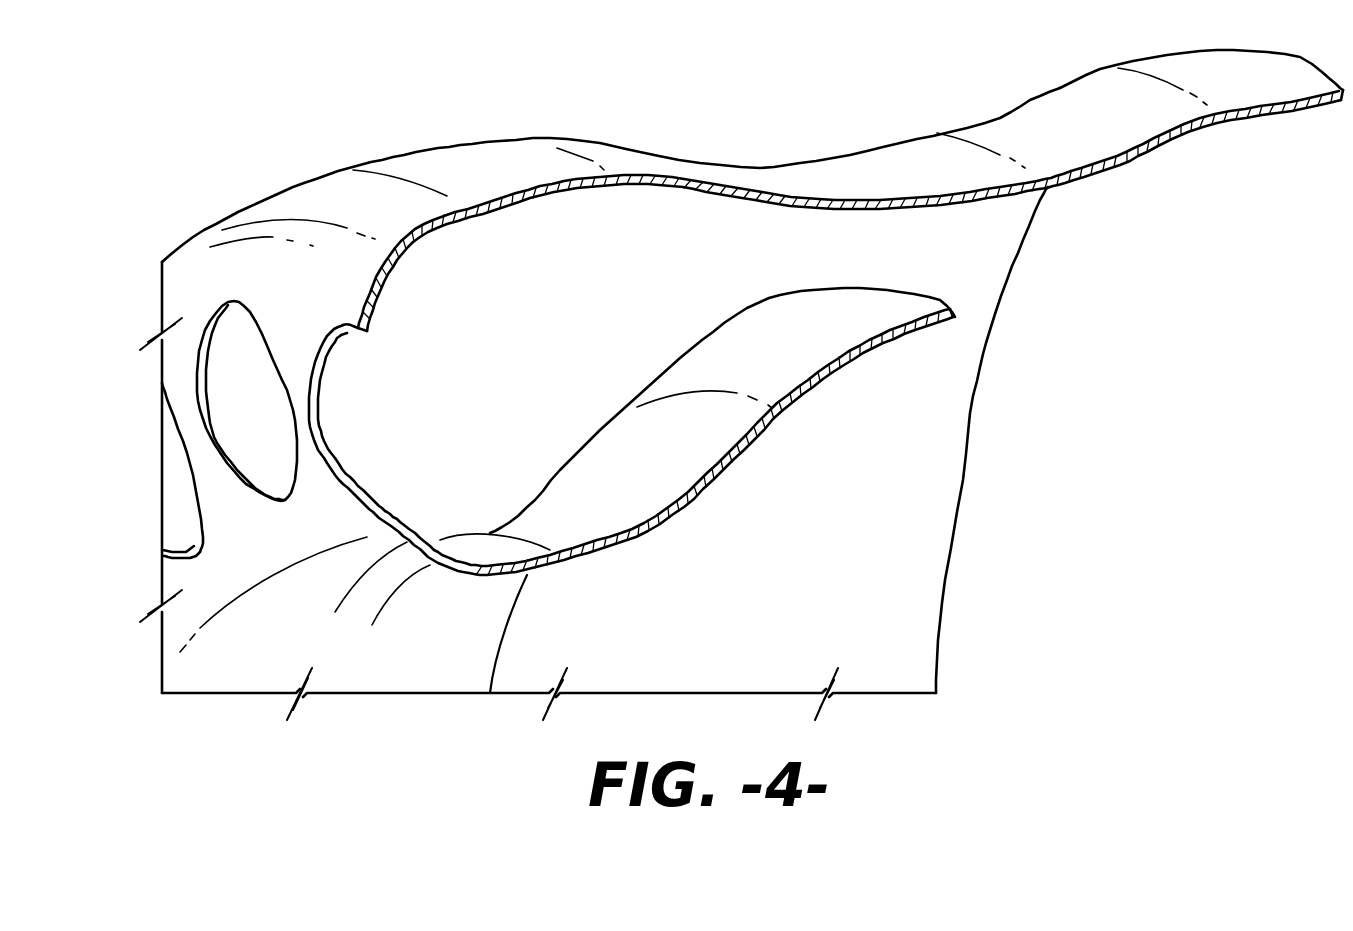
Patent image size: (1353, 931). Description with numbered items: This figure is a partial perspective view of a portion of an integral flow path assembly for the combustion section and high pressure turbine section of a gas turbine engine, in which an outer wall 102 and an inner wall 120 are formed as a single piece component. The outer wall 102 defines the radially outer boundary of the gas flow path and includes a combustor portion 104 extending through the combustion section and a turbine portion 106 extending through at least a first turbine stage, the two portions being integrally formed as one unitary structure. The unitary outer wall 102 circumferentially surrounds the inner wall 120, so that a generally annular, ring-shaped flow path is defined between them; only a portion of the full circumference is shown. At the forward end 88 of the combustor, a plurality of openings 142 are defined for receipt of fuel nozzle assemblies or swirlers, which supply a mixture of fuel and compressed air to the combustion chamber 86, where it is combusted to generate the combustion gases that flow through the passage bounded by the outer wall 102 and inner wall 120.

The combustion chamber 86 is at (525, 465).
The forward end 88 is at (247, 557).
The outer wall 102 is at (625, 165).
The combustor portion 104 is at (427, 135).
The turbine portion 106 is at (1012, 78).
The inner wall 120 is at (850, 312).
The opening 142 is at (185, 493).